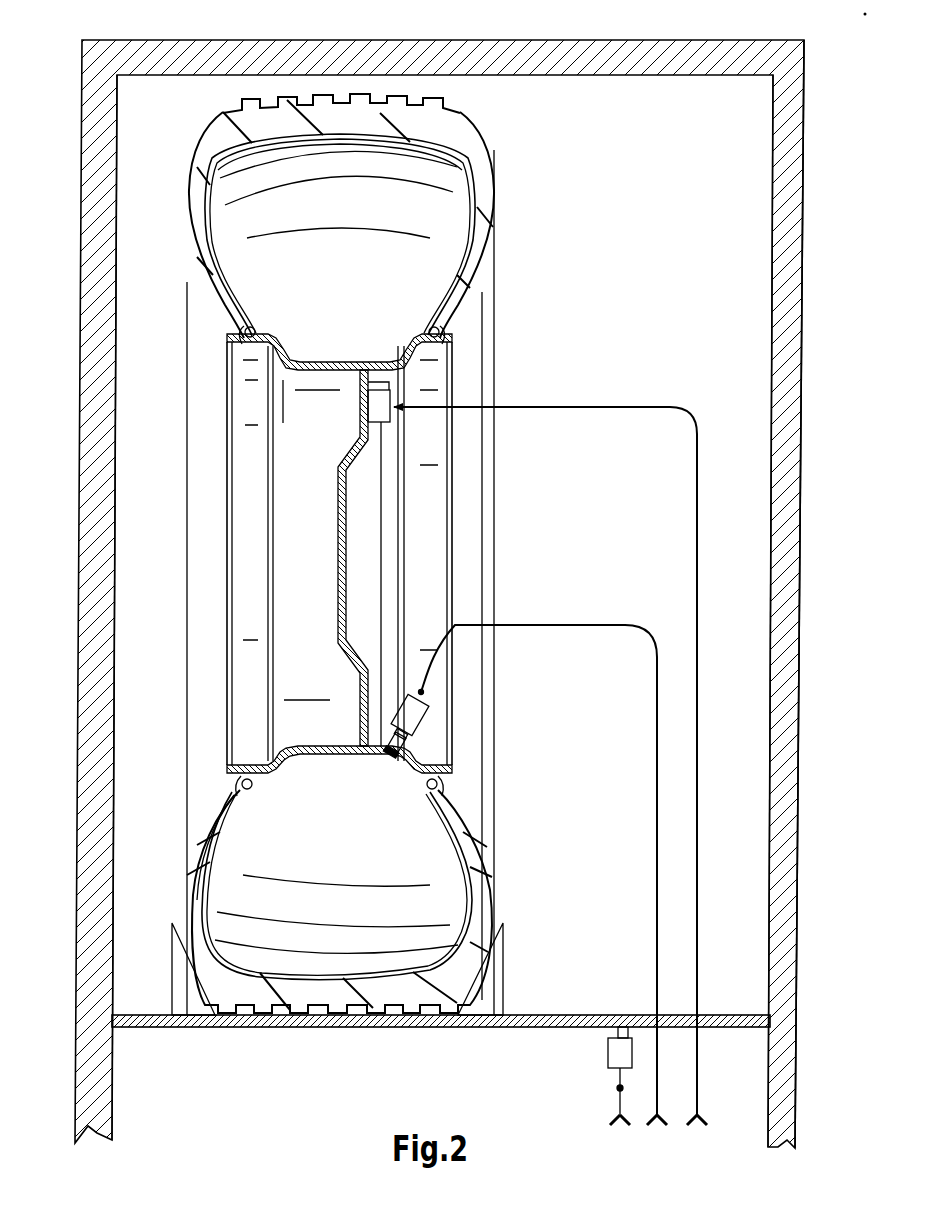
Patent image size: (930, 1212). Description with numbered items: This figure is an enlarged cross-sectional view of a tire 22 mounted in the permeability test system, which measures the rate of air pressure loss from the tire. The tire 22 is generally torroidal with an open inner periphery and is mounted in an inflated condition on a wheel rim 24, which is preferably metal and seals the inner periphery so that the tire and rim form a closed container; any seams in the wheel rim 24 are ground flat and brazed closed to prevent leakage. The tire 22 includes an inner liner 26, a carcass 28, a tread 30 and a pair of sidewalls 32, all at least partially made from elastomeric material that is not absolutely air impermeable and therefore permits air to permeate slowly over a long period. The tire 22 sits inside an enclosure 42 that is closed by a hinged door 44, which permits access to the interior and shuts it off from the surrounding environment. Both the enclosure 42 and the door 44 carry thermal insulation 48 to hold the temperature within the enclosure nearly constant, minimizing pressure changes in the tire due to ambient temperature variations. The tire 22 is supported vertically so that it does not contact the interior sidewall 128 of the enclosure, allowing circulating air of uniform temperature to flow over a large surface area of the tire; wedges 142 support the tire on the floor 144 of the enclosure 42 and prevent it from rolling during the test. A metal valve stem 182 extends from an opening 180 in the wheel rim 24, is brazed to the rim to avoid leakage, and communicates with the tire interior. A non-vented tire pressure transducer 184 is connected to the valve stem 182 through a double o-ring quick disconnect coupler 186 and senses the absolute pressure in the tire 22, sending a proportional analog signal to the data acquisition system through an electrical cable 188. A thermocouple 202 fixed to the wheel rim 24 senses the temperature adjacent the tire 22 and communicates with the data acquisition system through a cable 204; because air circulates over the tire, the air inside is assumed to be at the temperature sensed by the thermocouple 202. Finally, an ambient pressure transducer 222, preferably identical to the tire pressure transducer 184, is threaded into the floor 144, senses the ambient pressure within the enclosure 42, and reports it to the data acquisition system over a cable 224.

The tire 22 is at (183, 166).
The wheel rim 24 is at (307, 768).
The inner liner 26 is at (292, 975).
The carcass 28 is at (200, 885).
The tread 30 is at (415, 107).
The sidewalls 32 is at (197, 860).
The enclosure 42 is at (79, 160).
The door 44 is at (806, 166).
The thermal insulation 48 is at (112, 468).
The sidewall of the enclosure 128 is at (772, 366).
The wedges 142 is at (182, 985).
The floor 144 is at (560, 1014).
The opening 180 is at (390, 744).
The valve stem 182 is at (392, 762).
The tire pressure transducer 184 is at (418, 720).
The quick disconnect coupler 186 is at (396, 736).
The electrical cable 188 is at (655, 765).
The thermocouple 202 is at (393, 412).
The cable 204 is at (580, 407).
The ambient pressure transducer 222 is at (608, 1052).
The cable 224 is at (618, 1106).